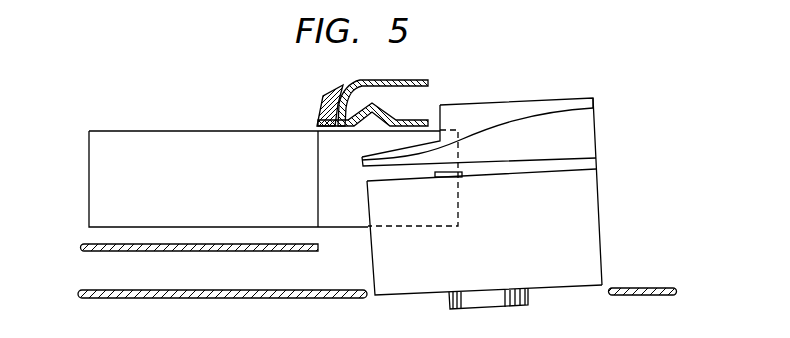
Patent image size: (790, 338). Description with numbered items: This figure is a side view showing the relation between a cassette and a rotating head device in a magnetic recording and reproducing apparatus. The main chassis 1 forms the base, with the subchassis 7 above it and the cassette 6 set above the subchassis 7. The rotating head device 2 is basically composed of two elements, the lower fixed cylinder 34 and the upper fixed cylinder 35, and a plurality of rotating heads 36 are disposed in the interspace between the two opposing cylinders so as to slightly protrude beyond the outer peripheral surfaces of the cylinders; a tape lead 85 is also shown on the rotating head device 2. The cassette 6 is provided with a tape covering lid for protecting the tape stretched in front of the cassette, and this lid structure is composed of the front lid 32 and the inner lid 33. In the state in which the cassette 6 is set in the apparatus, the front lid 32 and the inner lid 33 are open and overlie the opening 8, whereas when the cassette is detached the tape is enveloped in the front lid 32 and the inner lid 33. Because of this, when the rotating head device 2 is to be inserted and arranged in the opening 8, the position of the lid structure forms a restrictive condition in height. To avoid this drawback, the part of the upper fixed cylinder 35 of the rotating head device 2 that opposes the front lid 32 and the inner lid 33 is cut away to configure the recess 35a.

The main chassis 1 is at (84, 291).
The rotating head device 2 is at (649, 117).
The cassette 6 is at (90, 172).
The subchassis 7 is at (88, 247).
The opening 8 is at (322, 181).
The front lid 32 is at (398, 80).
The inner lid 33 is at (320, 113).
The lower fixed cylinder 34 is at (594, 198).
The upper fixed cylinder 35 is at (550, 98).
The recess 35a is at (440, 110).
The rotating head 36 is at (452, 178).
The tape lead 85 is at (517, 118).